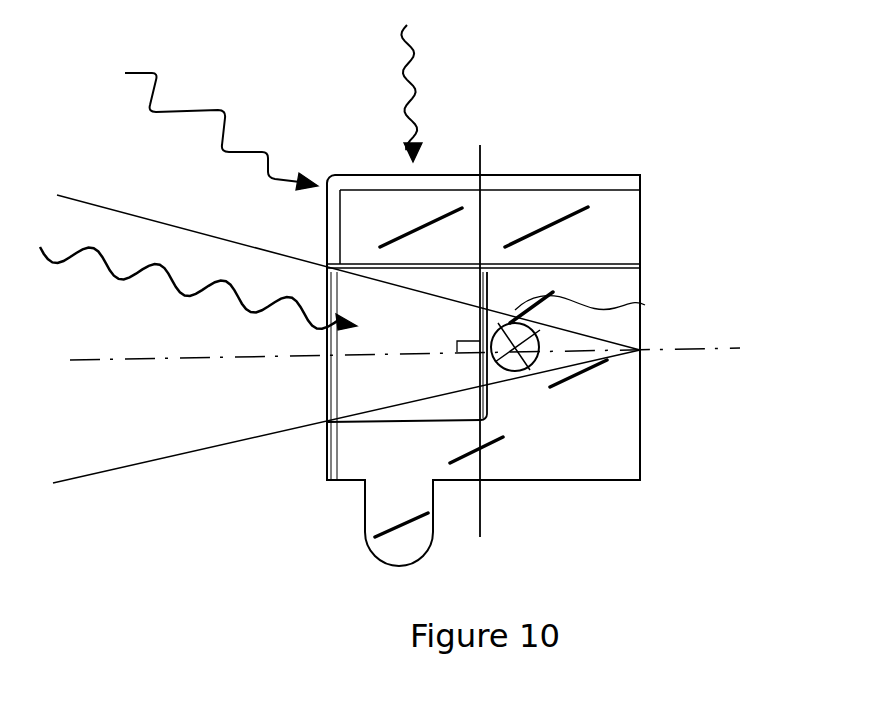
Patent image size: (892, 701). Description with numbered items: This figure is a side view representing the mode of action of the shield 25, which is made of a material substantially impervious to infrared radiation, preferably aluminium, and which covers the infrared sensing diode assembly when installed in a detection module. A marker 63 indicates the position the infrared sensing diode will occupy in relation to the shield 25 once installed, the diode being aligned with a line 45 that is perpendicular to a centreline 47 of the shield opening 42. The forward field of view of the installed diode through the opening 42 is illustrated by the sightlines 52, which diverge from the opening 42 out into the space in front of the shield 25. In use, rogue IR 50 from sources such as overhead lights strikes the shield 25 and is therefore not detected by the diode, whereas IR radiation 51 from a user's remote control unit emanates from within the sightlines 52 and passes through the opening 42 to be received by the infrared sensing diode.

The shield 25 is at (705, 174).
The shield opening 42 is at (335, 386).
The line 45 is at (480, 510).
The centreline 47 is at (724, 349).
The rogue IR 50 is at (222, 111).
The IR radiation 51 is at (90, 264).
The sightlines 52 is at (125, 210).
The marker 63 is at (640, 302).